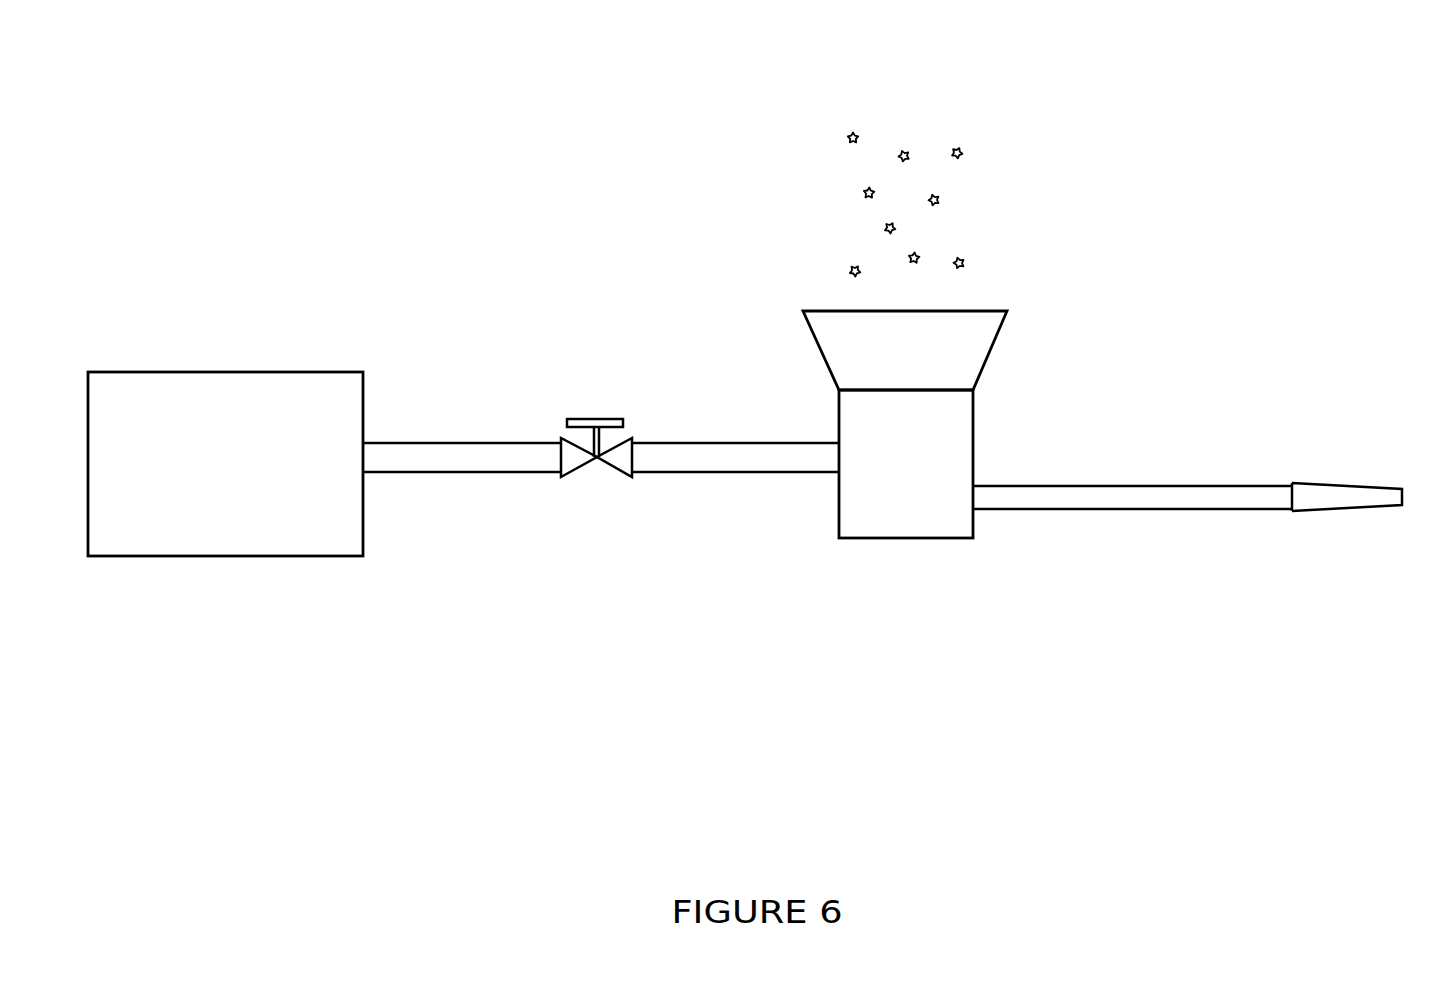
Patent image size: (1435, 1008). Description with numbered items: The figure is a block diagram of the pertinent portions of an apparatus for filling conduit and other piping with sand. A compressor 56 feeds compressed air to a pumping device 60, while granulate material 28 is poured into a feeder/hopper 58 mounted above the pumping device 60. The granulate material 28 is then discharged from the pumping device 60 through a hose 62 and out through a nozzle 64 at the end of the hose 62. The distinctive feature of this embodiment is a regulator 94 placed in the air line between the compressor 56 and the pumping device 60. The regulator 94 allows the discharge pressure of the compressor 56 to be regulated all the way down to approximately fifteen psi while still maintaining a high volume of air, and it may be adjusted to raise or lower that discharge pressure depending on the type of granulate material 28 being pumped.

The granulate material 28 is at (979, 163).
The compressor 56 is at (190, 372).
The feeder/hopper 58 is at (990, 352).
The pumping device 60 is at (913, 538).
The hose 62 is at (1070, 509).
The nozzle 64 is at (1325, 510).
The regulator 94 is at (585, 467).